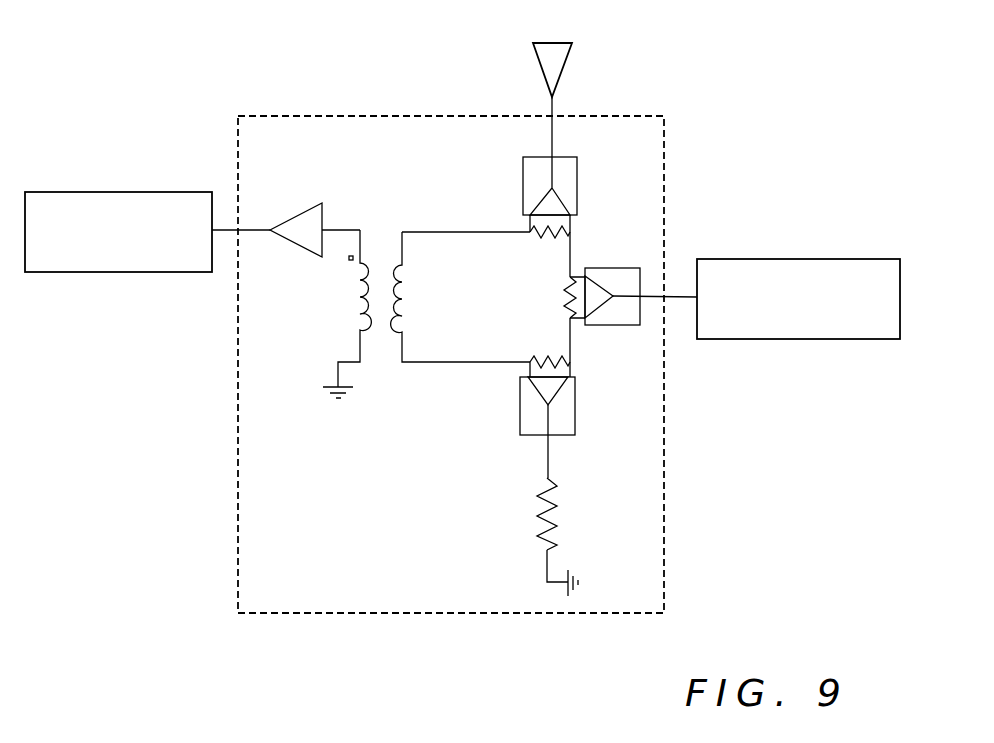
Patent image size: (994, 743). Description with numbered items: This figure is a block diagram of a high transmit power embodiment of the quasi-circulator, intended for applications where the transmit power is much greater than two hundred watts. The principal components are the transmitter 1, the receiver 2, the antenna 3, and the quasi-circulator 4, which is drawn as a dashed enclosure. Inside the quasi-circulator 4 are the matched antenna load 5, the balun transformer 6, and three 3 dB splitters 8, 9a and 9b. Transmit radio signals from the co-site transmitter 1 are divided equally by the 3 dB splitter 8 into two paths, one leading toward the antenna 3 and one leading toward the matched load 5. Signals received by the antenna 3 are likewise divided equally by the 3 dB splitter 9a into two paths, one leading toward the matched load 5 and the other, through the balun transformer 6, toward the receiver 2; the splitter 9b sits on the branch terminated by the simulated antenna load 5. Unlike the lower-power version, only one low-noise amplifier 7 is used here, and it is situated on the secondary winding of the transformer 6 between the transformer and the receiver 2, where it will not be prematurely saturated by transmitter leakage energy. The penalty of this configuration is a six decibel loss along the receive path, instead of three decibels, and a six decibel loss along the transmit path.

The transmitter 1 is at (752, 260).
The receiver 2 is at (148, 192).
The antenna 3 is at (559, 88).
The quasi-circulator 4 is at (628, 117).
The matched load 5 is at (565, 542).
The balun transformer 6 is at (316, 348).
The low-noise amplifier 7 is at (311, 184).
The 3 dB splitter 8 is at (614, 260).
The 3 dB splitter 9a is at (586, 177).
The 3 dB splitter 9b is at (587, 421).